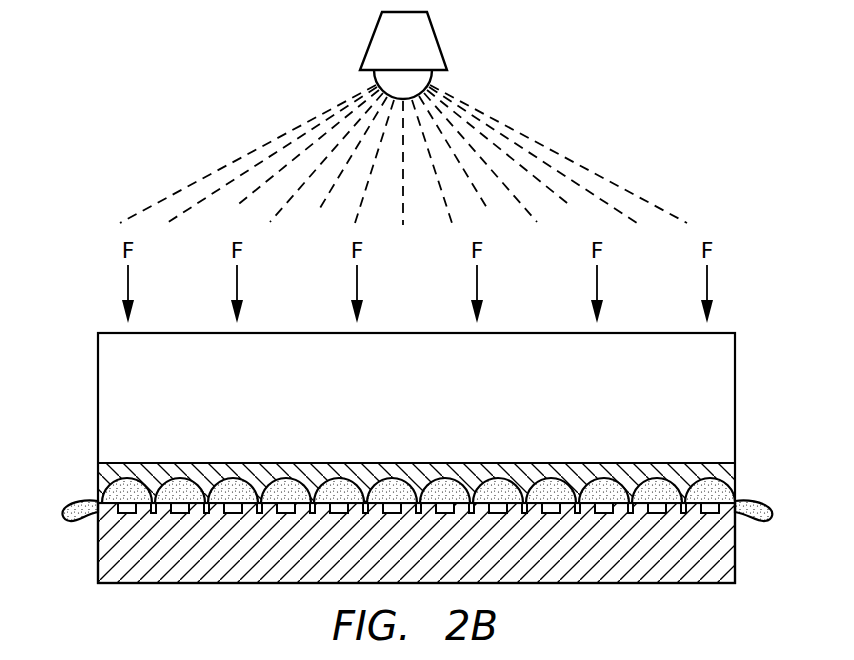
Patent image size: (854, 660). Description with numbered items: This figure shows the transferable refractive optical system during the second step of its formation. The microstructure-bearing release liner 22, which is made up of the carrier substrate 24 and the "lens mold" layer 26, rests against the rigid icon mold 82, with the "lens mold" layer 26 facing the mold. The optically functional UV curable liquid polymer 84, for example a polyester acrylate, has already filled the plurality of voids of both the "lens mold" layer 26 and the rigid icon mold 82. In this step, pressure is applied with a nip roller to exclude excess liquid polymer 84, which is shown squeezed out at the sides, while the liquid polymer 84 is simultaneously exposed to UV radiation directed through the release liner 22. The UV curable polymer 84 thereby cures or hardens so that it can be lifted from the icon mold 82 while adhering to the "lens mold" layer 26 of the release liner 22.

The microstructure-bearing release liner 22 is at (780, 328).
The carrier substrate 24 is at (444, 417).
The "lens mold" layer 26 is at (110, 467).
The rigid icon mold 82 is at (712, 565).
The optically functional UV curable liquid polymer 84 is at (235, 498).